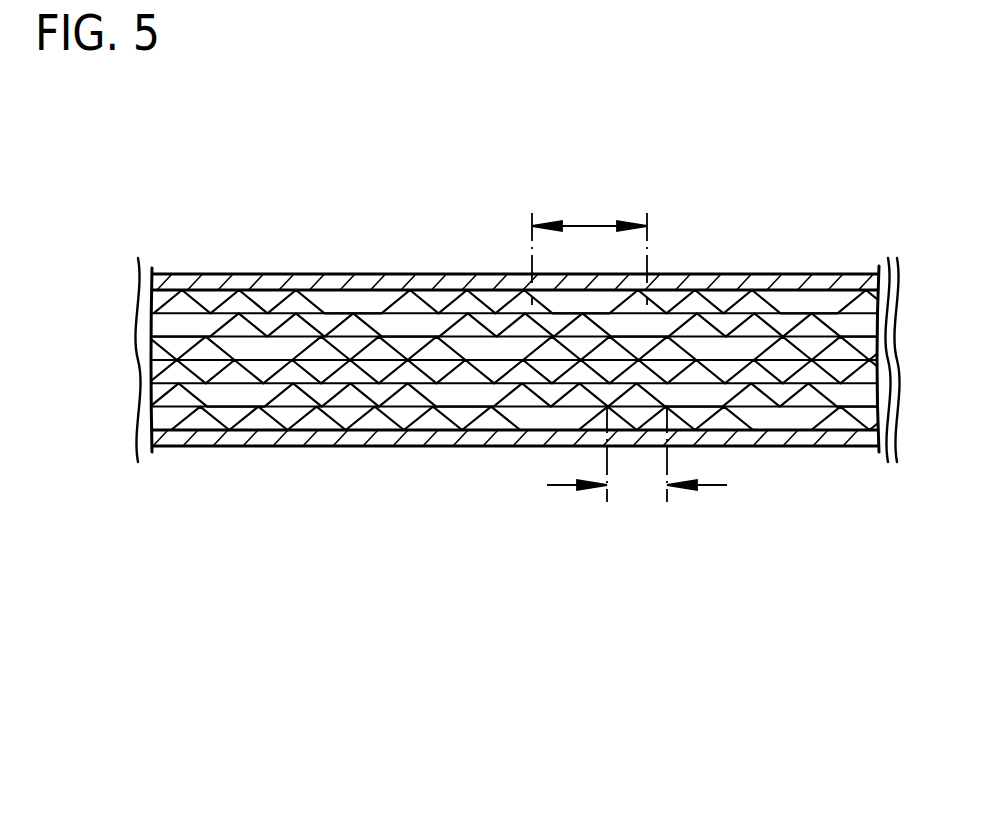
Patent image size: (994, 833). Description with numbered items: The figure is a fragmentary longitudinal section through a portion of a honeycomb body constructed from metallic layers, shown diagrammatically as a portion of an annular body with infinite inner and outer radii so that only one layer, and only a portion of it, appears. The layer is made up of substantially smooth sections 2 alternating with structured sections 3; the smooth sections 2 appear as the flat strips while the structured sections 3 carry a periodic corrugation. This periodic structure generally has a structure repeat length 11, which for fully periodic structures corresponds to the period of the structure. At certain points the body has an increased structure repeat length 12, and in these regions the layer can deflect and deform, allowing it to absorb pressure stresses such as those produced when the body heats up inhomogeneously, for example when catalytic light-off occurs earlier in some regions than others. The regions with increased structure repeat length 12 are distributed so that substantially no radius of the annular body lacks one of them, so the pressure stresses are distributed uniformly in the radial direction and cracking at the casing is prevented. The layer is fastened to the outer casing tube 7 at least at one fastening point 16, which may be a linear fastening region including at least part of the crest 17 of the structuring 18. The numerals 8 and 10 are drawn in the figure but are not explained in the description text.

The substantially smooth section 2 is at (322, 410).
The structured section 3 is at (312, 325).
The outer casing tube 7 is at (198, 273).
The bottom liner 8 is at (228, 443).
The flute 10 is at (375, 302).
The structure repeat length 11 is at (635, 487).
The increased structure repeat length 12 is at (590, 227).
The fastening point 16 is at (762, 290).
The crest 17 is at (757, 288).
The structuring 18 is at (797, 291).